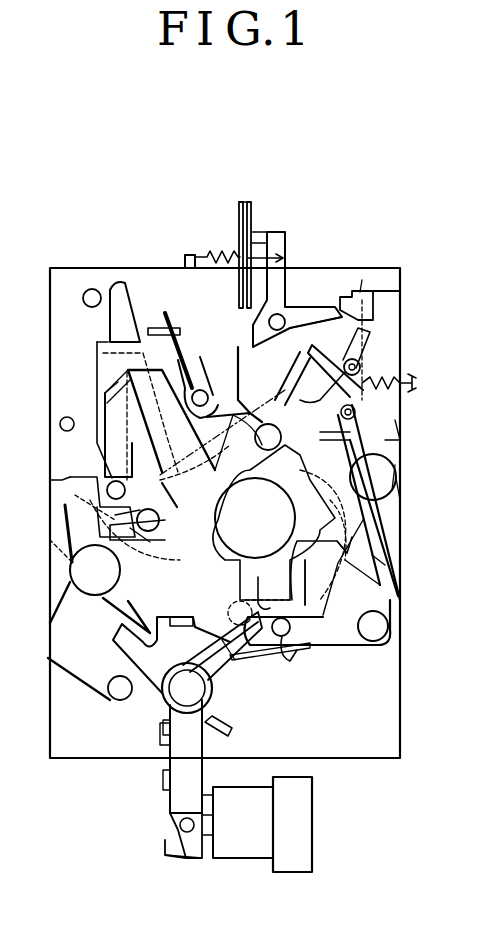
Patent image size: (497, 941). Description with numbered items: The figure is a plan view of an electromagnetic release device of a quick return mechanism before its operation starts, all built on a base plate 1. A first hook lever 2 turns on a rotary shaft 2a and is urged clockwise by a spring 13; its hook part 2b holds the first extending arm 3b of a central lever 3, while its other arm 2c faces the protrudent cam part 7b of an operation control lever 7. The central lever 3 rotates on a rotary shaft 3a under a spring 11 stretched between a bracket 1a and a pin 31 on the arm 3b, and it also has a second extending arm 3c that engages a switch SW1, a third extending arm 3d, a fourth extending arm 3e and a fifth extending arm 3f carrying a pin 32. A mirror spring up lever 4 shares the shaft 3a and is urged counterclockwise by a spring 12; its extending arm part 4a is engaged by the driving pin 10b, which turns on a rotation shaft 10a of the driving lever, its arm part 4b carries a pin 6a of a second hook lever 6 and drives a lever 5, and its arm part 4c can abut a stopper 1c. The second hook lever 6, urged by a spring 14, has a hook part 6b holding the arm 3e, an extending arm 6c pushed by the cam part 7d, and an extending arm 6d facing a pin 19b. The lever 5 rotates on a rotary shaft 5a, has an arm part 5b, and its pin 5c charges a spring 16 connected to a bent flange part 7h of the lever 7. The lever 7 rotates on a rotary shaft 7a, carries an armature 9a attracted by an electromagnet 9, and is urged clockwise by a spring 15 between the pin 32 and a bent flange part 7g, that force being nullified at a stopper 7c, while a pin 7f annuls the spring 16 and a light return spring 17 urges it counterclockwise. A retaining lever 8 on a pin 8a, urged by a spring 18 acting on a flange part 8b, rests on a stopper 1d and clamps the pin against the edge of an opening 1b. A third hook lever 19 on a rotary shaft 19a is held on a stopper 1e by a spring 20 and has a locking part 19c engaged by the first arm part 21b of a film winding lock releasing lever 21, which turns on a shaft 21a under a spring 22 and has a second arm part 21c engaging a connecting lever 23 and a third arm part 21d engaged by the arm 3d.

The base plate 1 is at (225, 488).
The bracket 1a is at (401, 299).
The opening 1b is at (82, 323).
The stopper 1c is at (222, 433).
The stopper 1d is at (82, 265).
The stopper 1e is at (409, 425).
The first hook lever 2 is at (81, 519).
The rotary shaft 2a is at (68, 570).
The hook part 2b is at (86, 469).
The arm 2c is at (133, 609).
The central lever 3 is at (139, 430).
The rotary shaft 3a is at (277, 522).
The first extending arm 3b is at (80, 510).
The second extending arm 3c is at (87, 366).
The third extending arm 3d is at (248, 442).
The fourth extending arm 3e is at (389, 518).
The fifth extending arm 3f is at (268, 592).
The mirror spring up lever 4 is at (373, 480).
The extending arm part 4a is at (40, 537).
The arm part 4b is at (378, 530).
The arm part 4c is at (375, 469).
The lever 5 is at (375, 515).
The rotary shaft 5a is at (393, 640).
The arm part 5b is at (390, 583).
The pin 5c is at (301, 657).
The second hook lever 6 is at (340, 570).
The pin 6a is at (416, 483).
The hook part 6b is at (324, 563).
The extending arm 6c is at (330, 660).
The extending arm 6d is at (292, 378).
The operation control lever 7 is at (171, 737).
The rotary shaft 7a is at (167, 696).
The cam part 7b is at (102, 646).
The stopper 7c is at (180, 600).
The cam part 7d is at (246, 655).
The pin 7f is at (235, 671).
The bent flange part 7g is at (237, 812).
The bent flange part 7h is at (145, 756).
The retaining lever 8 is at (159, 321).
The pin 8a is at (204, 367).
The flange part 8b is at (157, 308).
The electromagnet 9 is at (307, 834).
The armature 9a is at (184, 884).
The rotation shaft 10a is at (43, 412).
The driving pin 10b is at (41, 466).
The spring 11 is at (322, 396).
The spring 12 is at (407, 445).
The spring 13 is at (62, 641).
The spring 14 is at (409, 551).
The spring 15 is at (241, 734).
The spring 16 is at (266, 652).
The return spring 17 is at (96, 703).
The spring 18 is at (179, 334).
The third hook lever 19 is at (376, 370).
The rotary shaft 19a is at (391, 346).
The pin 19b is at (330, 419).
The locking part 19c is at (378, 258).
The spring 20 is at (403, 397).
The film winding lock releasing lever 21 is at (297, 266).
The shaft 21a is at (298, 280).
The first arm part 21b is at (316, 298).
The second arm part 21c is at (313, 230).
The third arm part 21d is at (234, 384).
The spring 22 is at (238, 230).
The connecting lever 23 is at (259, 203).
The pin 31 is at (137, 553).
The pin 32 is at (309, 586).
The switch SW1 is at (255, 222).